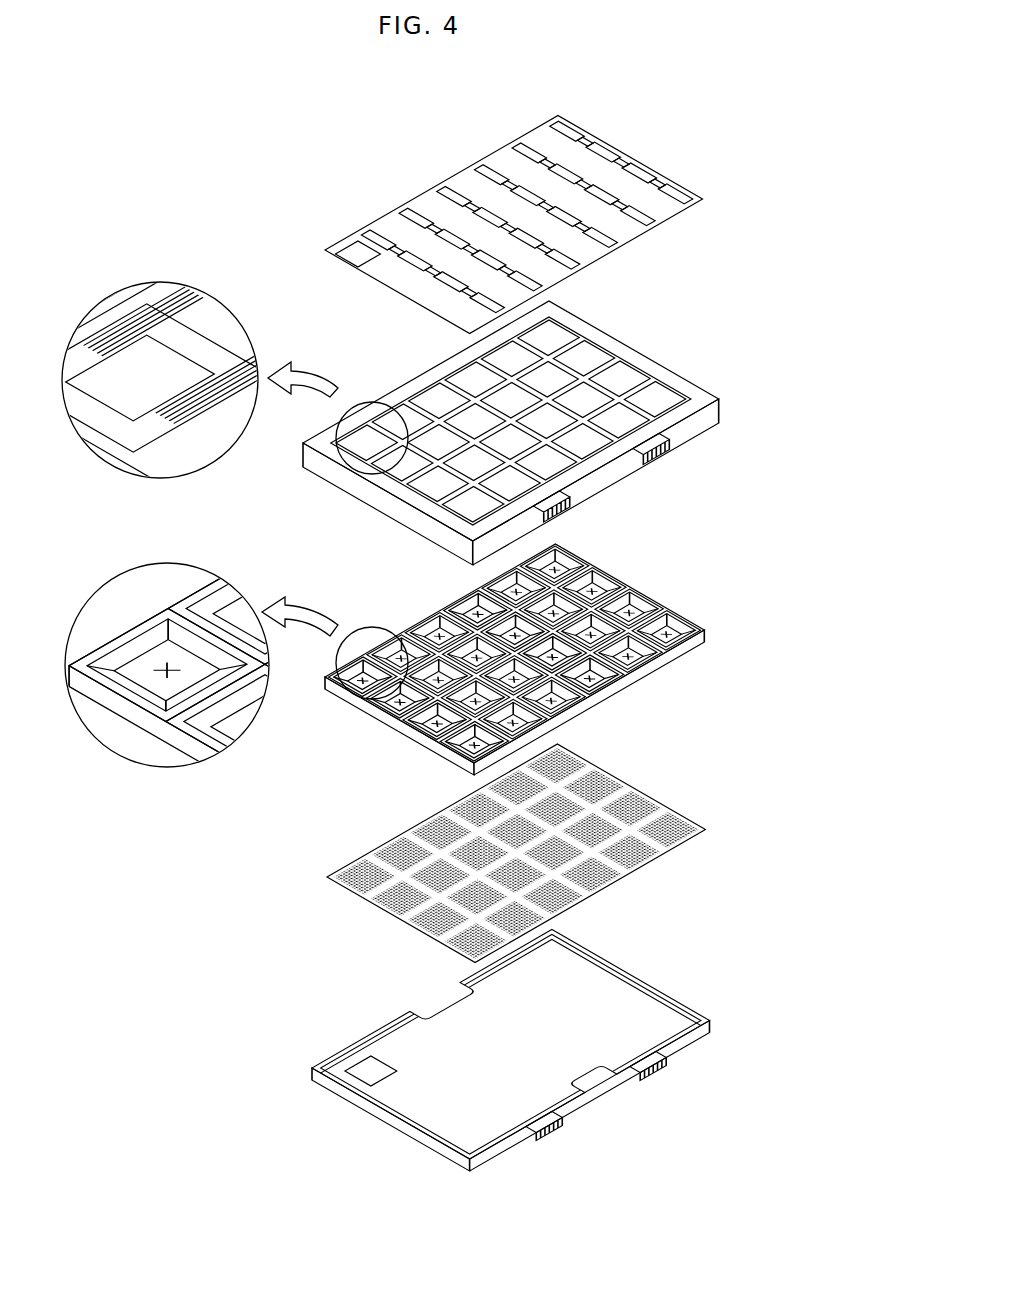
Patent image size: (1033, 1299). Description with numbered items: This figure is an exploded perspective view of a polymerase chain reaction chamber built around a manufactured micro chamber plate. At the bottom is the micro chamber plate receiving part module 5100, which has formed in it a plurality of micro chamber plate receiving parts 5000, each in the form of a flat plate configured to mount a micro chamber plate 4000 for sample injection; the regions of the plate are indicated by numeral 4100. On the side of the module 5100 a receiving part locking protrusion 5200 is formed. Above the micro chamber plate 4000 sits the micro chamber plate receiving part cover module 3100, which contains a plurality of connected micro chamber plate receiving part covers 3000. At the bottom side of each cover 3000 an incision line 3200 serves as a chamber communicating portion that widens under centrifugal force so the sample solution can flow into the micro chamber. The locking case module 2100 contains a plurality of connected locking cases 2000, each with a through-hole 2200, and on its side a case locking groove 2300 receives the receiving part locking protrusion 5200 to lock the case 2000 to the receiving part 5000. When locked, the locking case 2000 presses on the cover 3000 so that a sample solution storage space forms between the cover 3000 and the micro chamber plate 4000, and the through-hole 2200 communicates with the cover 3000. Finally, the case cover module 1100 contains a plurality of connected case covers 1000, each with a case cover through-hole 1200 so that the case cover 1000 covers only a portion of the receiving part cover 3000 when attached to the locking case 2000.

The case cover 1000 is at (489, 208).
The case cover module 1100 is at (640, 150).
The case cover through-hole 1200 is at (343, 242).
The locking case 2000 is at (409, 378).
The locking case module 2100 is at (710, 384).
The through-hole 2200 is at (188, 389).
The case locking groove 2300 is at (664, 452).
The micro chamber plate receiving part cover 3000 is at (402, 670).
The micro chamber plate receiving part cover module 3100 is at (654, 565).
The incision line 3200 is at (158, 710).
The micro chamber plate 4000 is at (497, 834).
The mesh regions 4100 is at (642, 766).
The micro chamber plate receiving part 5000 is at (529, 1031).
The micro chamber plate receiving part module 5100 is at (633, 967).
The receiving part locking protrusion 5200 is at (657, 1070).